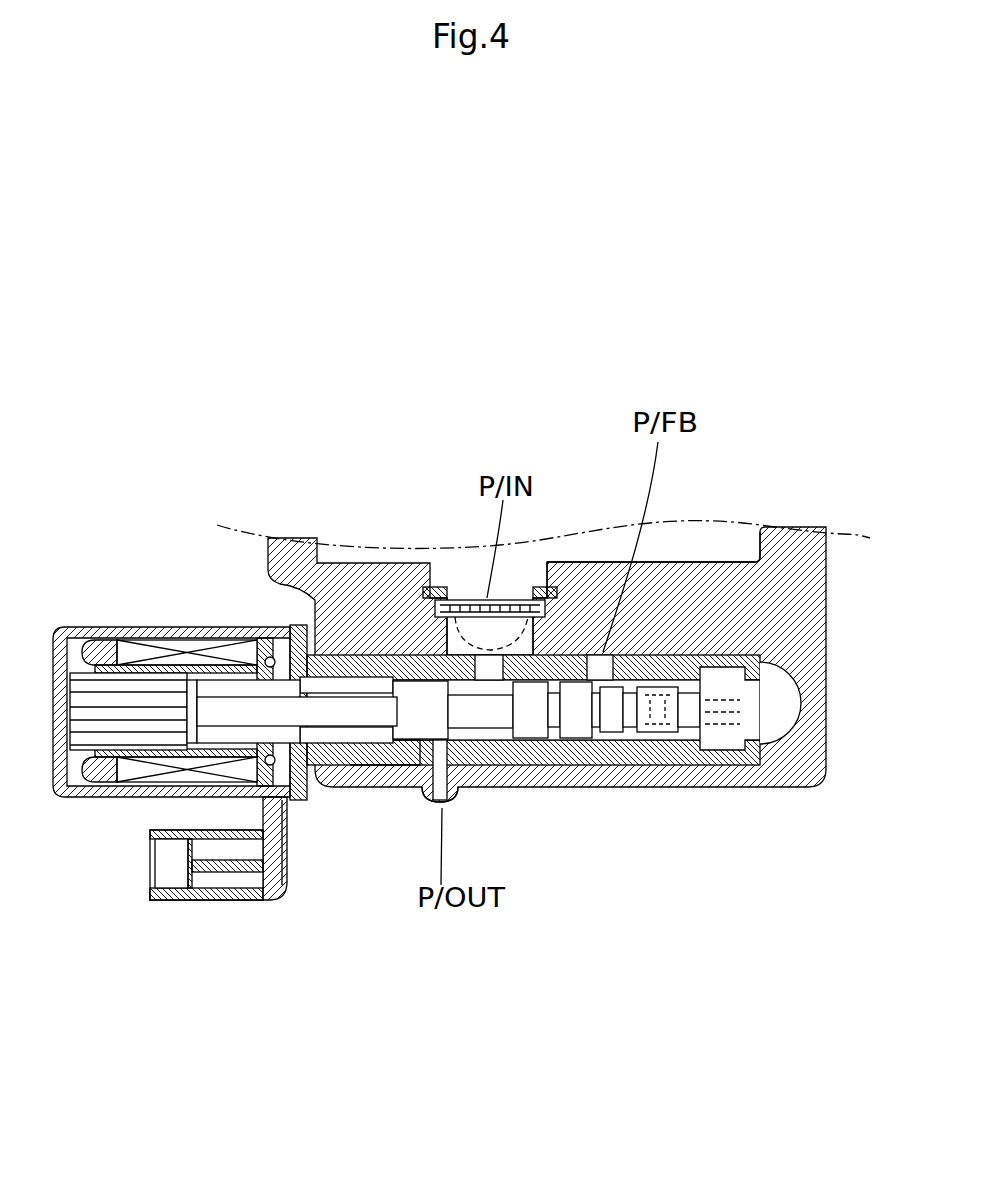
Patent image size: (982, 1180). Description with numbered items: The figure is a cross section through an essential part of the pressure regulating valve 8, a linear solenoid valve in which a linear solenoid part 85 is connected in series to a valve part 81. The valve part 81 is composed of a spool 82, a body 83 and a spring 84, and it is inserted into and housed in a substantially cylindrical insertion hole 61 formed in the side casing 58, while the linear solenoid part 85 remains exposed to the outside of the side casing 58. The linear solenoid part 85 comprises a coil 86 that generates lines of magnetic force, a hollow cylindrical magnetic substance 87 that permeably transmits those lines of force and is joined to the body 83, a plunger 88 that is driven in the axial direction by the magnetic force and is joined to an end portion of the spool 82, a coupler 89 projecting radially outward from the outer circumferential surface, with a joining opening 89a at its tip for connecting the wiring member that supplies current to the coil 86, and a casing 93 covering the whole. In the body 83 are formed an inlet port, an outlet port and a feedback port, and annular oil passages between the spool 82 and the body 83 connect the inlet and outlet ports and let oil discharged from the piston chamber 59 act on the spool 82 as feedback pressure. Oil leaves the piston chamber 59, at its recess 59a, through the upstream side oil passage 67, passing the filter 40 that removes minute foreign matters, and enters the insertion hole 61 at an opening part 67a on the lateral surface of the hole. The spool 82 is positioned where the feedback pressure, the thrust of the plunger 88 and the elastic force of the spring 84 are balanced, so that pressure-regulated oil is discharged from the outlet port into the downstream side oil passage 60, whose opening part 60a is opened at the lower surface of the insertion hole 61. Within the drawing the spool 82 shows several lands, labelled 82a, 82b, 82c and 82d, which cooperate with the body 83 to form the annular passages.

The pressure regulating valve 8 is at (377, 968).
The filter 40 is at (537, 582).
The side casing 58 is at (790, 540).
The piston chamber 59 is at (578, 548).
The recess 59a is at (548, 550).
The downstream side oil passage 60 is at (440, 783).
The opening part 60a is at (422, 790).
The insertion hole 61 is at (360, 763).
The upstream side oil passage 67 is at (462, 608).
The opening part 67a is at (470, 636).
The valve part 81 is at (393, 895).
The spool 82 is at (500, 777).
The first land 82a is at (487, 740).
The second land 82b is at (565, 740).
The third land 82c is at (596, 740).
The spring seat land 82d is at (632, 738).
The body 83 is at (574, 740).
The spring 84 is at (688, 752).
The linear solenoid part 85 is at (225, 739).
The coil 86 is at (168, 645).
The magnetic substance 87 is at (135, 690).
The plunger 88 is at (250, 712).
The coupler 89 is at (161, 897).
The joining opening 89a is at (150, 870).
The casing 93 is at (142, 627).